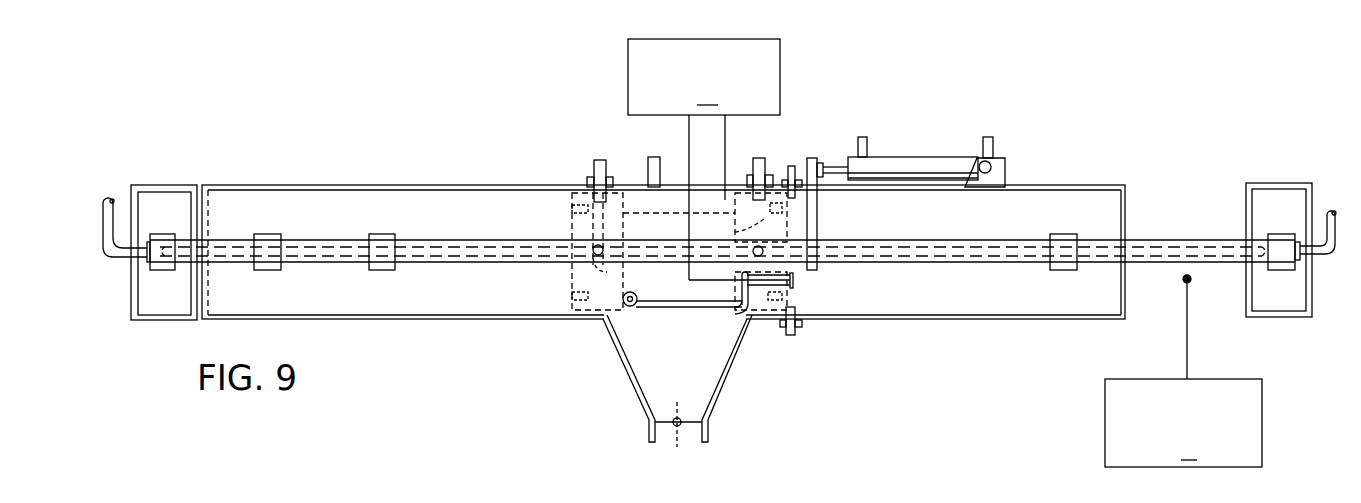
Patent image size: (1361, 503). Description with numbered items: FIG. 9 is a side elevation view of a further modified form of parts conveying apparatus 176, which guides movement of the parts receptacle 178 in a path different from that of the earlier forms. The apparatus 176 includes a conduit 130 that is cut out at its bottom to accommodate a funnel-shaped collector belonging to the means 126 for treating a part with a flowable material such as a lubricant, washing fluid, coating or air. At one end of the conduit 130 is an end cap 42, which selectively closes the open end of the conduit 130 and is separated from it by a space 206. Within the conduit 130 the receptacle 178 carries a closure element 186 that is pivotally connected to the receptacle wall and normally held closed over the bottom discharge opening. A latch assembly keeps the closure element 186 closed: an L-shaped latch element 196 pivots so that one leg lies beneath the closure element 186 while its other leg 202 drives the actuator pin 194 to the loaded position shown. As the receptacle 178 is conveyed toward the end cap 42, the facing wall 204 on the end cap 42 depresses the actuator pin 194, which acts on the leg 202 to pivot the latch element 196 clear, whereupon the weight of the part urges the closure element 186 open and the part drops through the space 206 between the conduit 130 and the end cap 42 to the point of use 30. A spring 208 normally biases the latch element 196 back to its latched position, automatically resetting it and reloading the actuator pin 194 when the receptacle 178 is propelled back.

The point of use 30 is at (1183, 371).
The end cap 42 is at (1275, 183).
The means for treating a part 126 is at (598, 373).
The conduit 130 is at (1071, 184).
The apparatus for conveying parts 176 is at (1048, 126).
The parts receptacle 178 is at (620, 192).
The closure element 186 is at (690, 303).
The actuator pin 194 is at (793, 286).
The latch element 196 is at (745, 318).
The leg 202 is at (743, 283).
The facing wall 204 is at (1247, 281).
The space 206 is at (1154, 305).
The spring 208 is at (704, 159).